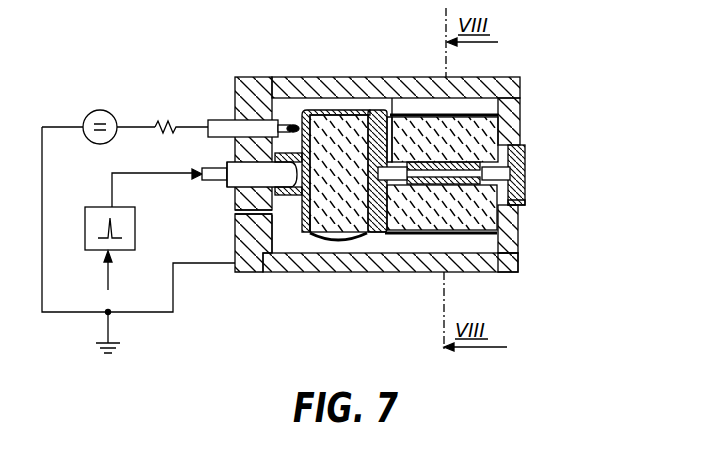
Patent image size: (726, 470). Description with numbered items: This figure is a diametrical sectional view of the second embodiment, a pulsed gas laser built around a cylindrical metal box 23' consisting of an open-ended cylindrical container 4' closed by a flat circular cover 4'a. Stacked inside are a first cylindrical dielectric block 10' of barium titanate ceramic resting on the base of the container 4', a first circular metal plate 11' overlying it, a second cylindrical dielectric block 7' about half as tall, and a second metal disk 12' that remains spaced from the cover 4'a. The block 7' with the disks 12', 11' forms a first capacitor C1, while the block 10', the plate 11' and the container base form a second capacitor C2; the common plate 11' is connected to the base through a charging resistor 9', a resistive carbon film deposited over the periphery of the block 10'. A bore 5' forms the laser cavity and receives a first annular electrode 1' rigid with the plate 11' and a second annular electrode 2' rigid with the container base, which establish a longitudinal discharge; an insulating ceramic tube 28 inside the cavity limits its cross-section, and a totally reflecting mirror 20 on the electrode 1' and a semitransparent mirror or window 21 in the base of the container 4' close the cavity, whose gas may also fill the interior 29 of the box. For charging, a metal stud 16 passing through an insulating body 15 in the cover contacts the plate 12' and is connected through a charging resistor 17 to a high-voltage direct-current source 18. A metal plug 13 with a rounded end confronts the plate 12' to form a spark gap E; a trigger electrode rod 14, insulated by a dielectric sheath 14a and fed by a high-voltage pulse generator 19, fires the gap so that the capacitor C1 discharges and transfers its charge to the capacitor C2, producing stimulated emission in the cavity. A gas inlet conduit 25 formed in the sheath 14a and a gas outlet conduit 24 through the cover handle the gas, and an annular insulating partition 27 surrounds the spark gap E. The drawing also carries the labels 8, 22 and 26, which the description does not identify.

The first annular electrode 1' is at (395, 93).
The second annular electrode 2' is at (523, 235).
The cylindrical container 4' is at (397, 284).
The flat circular cover 4'a is at (239, 117).
The bore forming the laser cavity 5' is at (472, 146).
The second cylindrical dielectric block 7' is at (325, 222).
The transducer shell 8 is at (327, 110).
The charging resistor 9' is at (441, 253).
The first cylindrical dielectric block 10' is at (537, 277).
The first circular metal plate 11' is at (362, 280).
The second circular metal plate 12' is at (280, 272).
The metal plug 13 is at (243, 176).
The trigger electrode rod 14 is at (200, 178).
The dielectric sheath 14a is at (222, 167).
The insulating body 15 is at (225, 123).
The metal stud 16 is at (292, 120).
The charging resistor 17 is at (163, 122).
The high-voltage direct-current source 18 is at (93, 110).
The high-voltage pulse generator 19 is at (85, 223).
The totally reflecting mirror 20 is at (362, 110).
The semitransparent mirror or window 21 is at (527, 167).
The plug flange 22 is at (525, 205).
The cylindrical metal box 23' is at (431, 101).
The gas outlet conduit 24 is at (248, 212).
The gas inlet conduit 25 is at (193, 173).
The output direction 26 is at (543, 175).
The annular partition 27 is at (237, 270).
The insulating tube 28 is at (430, 157).
The interior of the box 29 is at (457, 107).
The first capacitor C1 is at (336, 244).
The second capacitor C2 is at (401, 244).
The spark gap E is at (287, 225).